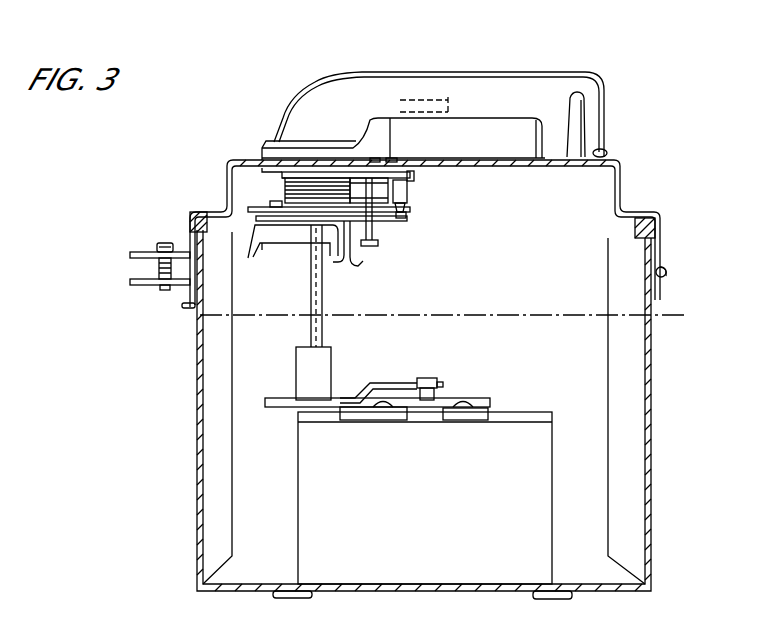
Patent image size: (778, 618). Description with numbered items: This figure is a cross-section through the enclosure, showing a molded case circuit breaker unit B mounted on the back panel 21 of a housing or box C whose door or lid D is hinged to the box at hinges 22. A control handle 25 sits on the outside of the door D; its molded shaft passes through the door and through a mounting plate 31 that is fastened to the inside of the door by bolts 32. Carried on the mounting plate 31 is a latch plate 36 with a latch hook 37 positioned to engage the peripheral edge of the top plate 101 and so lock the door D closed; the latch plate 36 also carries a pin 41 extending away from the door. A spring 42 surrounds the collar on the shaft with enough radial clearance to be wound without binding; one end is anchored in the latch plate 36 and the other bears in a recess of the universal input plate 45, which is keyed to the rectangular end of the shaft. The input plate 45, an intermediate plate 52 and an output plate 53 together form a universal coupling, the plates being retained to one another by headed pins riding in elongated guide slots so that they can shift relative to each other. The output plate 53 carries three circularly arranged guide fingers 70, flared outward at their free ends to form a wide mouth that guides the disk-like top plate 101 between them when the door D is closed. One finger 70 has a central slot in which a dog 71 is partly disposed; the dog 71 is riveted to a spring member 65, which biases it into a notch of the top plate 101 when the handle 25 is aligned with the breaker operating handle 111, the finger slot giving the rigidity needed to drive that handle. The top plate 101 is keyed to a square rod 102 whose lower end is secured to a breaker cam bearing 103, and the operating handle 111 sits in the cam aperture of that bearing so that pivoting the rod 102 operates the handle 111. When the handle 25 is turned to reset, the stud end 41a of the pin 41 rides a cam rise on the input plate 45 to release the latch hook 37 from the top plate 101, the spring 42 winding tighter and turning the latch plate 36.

The back panel 21 is at (252, 591).
The hinges 22 is at (668, 272).
The control handle 25 is at (483, 72).
The mounting plate 31 is at (262, 170).
The bolts 32 is at (278, 182).
The latch plate 36 is at (414, 180).
The latch hook 37 is at (318, 232).
The pin 41 is at (412, 193).
The stud end 41a is at (410, 216).
The spring 42 is at (352, 197).
The universal input plate 45 is at (380, 219).
The intermediate plate 52 is at (266, 210).
The output plate 53 is at (376, 226).
The spring member 65 is at (376, 246).
The guide fingers 70 is at (356, 264).
The dog 71 is at (341, 262).
The top plate 101 is at (263, 250).
The square rod 102 is at (308, 282).
The breaker cam bearing 103 is at (331, 381).
The operating handle 111 is at (430, 380).
The molded case circuit breaker unit B is at (414, 502).
The housing or box C is at (197, 418).
The door or lid D is at (240, 160).